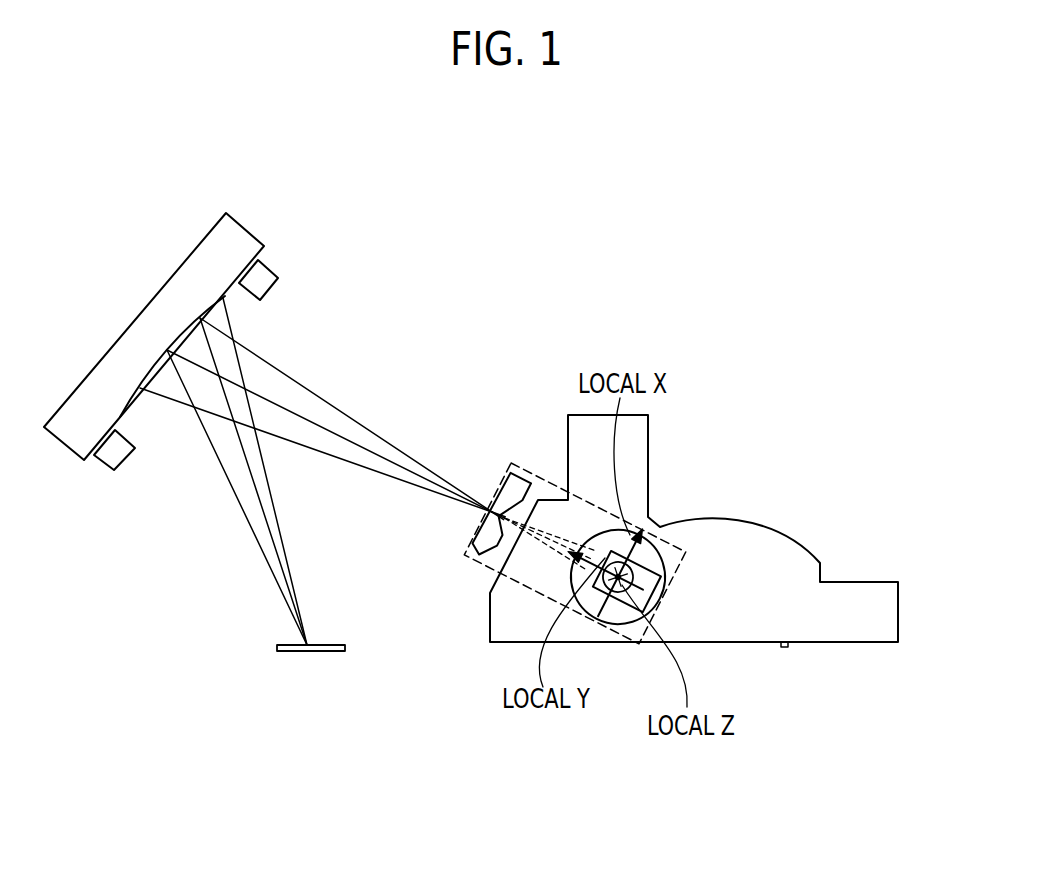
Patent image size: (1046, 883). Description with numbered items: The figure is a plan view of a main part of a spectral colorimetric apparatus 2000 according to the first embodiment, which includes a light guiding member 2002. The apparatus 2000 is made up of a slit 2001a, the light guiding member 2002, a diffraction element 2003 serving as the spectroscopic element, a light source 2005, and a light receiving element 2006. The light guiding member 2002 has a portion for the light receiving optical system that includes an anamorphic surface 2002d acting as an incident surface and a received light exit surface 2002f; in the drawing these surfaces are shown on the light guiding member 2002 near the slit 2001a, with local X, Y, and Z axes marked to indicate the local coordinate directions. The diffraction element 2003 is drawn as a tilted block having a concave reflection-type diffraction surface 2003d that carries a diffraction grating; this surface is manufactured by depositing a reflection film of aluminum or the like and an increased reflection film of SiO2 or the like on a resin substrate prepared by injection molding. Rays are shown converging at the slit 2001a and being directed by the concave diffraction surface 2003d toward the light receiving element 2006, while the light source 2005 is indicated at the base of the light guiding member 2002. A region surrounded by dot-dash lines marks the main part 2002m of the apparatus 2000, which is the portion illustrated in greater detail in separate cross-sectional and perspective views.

The spectral colorimetric apparatus 2000 is at (770, 348).
The slit 2001a is at (490, 495).
The light guiding member 2002 is at (862, 597).
The anamorphic surface 2002d is at (655, 562).
The received light exit surface 2002f is at (505, 553).
The main part 2002m is at (514, 582).
The diffraction element 2003 is at (263, 287).
The concave reflection-type diffraction surface 2003d is at (140, 388).
The light source 2005 is at (787, 650).
The light receiving element 2006 is at (317, 652).